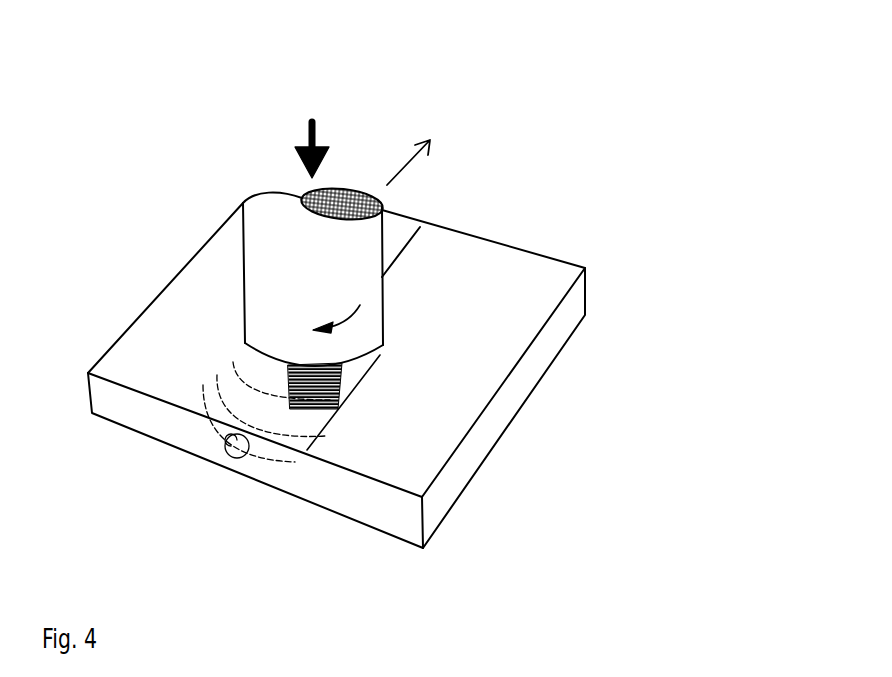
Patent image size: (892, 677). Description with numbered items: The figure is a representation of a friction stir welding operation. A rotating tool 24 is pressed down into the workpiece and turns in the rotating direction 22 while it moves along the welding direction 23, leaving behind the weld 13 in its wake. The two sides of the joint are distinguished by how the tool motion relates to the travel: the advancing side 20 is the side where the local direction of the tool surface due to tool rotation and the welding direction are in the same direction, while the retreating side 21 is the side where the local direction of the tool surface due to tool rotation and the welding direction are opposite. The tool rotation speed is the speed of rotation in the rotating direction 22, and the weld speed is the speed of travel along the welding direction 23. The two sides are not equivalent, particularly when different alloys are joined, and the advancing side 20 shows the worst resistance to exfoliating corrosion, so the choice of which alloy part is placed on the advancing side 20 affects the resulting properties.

The weld 13 is at (255, 397).
The advancing side 20 is at (200, 323).
The retreating side 21 is at (473, 340).
The rotating direction 22 is at (345, 323).
The welding direction 23 is at (415, 160).
The tool 24 is at (362, 190).